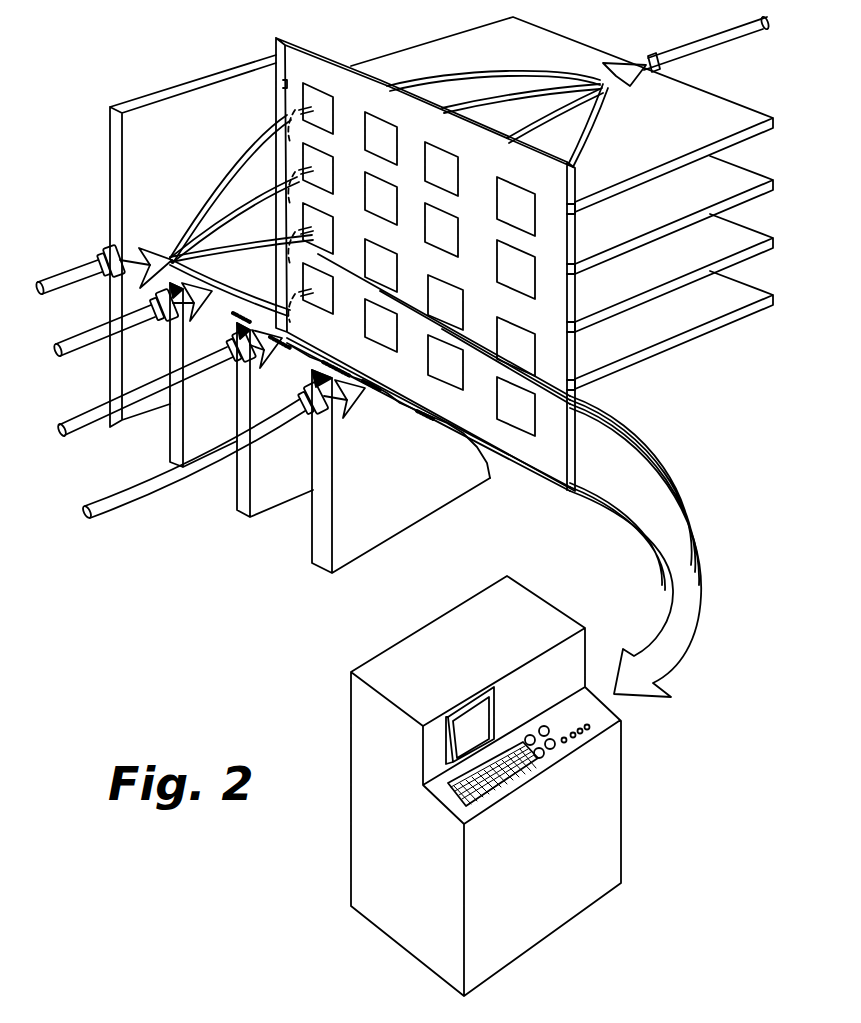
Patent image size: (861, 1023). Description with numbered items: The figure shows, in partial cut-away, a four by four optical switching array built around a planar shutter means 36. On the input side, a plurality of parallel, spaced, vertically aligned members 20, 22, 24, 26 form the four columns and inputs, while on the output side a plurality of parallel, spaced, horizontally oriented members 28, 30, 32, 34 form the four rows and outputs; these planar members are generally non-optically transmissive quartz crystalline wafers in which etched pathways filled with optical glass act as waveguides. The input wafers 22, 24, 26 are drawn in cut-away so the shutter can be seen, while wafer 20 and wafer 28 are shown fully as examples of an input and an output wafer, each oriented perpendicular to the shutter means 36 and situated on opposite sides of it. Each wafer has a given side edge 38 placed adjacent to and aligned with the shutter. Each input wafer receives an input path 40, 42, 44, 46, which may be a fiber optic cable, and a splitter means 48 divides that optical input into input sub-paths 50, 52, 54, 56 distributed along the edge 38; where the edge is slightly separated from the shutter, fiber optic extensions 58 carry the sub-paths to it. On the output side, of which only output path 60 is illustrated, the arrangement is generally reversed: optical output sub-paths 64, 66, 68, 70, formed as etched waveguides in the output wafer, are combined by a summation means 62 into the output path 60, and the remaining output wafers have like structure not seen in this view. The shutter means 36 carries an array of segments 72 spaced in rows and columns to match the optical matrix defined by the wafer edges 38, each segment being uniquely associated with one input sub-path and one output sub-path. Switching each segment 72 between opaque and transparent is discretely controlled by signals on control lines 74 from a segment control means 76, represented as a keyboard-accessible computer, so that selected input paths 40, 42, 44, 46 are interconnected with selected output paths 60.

The vertically aligned member 20 is at (138, 428).
The vertically aligned member 22 is at (170, 458).
The vertically aligned member 24 is at (236, 493).
The vertically aligned member 26 is at (312, 540).
The horizontally oriented member 28 is at (752, 138).
The horizontally oriented member 30 is at (754, 196).
The horizontally oriented member 32 is at (756, 252).
The horizontally oriented member 34 is at (745, 326).
The planar shutter means 36 is at (305, 44).
The side edge 38 is at (292, 80).
The input path 40 is at (72, 268).
The input path 42 is at (88, 325).
The input path 44 is at (94, 412).
The input path 46 is at (116, 508).
The splitter means 48 is at (145, 247).
The input sub-path 50 is at (212, 165).
The input sub-path 52 is at (250, 192).
The input sub-path 54 is at (260, 240).
The input sub-path 56 is at (266, 290).
The fiber optic extension 58 is at (290, 151).
The output path 60 is at (708, 48).
The summation means 62 is at (614, 82).
The optical output sub-path 64 is at (490, 68).
The optical output sub-path 66 is at (464, 100).
The optical output sub-path 68 is at (524, 125).
The optical output sub-path 70 is at (588, 138).
The segment 72 is at (337, 108).
The control line 74 is at (330, 262).
The segment control means 76 is at (623, 766).